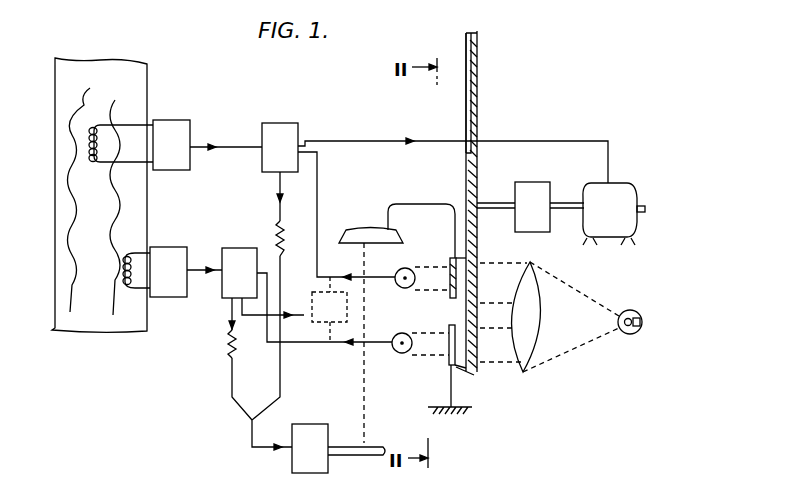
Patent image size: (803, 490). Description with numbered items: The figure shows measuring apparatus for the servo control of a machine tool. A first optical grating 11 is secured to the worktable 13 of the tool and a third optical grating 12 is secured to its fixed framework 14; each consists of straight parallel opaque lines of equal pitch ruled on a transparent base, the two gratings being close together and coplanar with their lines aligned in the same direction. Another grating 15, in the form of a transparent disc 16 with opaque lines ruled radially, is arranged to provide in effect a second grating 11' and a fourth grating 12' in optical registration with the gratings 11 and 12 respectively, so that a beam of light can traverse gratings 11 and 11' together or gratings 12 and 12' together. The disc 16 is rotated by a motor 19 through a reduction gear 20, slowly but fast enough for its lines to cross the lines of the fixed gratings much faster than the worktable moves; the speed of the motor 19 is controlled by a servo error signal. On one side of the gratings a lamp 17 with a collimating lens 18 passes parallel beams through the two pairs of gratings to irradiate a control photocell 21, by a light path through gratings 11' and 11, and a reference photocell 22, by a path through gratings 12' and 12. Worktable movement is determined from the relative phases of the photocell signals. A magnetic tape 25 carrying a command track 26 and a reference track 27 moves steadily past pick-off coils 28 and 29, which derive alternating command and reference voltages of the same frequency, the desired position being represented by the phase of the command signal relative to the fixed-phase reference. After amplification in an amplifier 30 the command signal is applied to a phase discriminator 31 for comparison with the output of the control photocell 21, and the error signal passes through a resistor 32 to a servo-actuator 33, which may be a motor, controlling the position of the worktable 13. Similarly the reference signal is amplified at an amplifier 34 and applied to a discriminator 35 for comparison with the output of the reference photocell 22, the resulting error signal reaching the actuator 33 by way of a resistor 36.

The magnetic tape 25 is at (93, 70).
The command track 26 is at (77, 192).
The reference track 27 is at (122, 256).
The pick-off coil 28 is at (90, 162).
The pick-off coil 29 is at (123, 275).
The amplifier 30 is at (182, 156).
The phase discriminator 31 is at (291, 158).
The resistor 32 is at (274, 229).
The servo-actuator 33 is at (321, 459).
The amplifier 34 is at (179, 283).
The discriminator 35 is at (251, 284).
The resistor 36 is at (227, 350).
The worktable 13 is at (363, 228).
The first optical grating 11 is at (442, 259).
The second grating 11' is at (483, 239).
The third optical grating 12 is at (439, 366).
The fourth grating 12' is at (478, 378).
The fixed framework 14 is at (460, 403).
The grating 15 is at (466, 123).
The transparent disc 16 is at (477, 88).
The lamp 17 is at (630, 334).
The collimating lens 18 is at (535, 308).
The motor 19 is at (619, 220).
The reduction gear 20 is at (544, 217).
The control photocell 21 is at (396, 272).
The reference photocell 22 is at (400, 354).